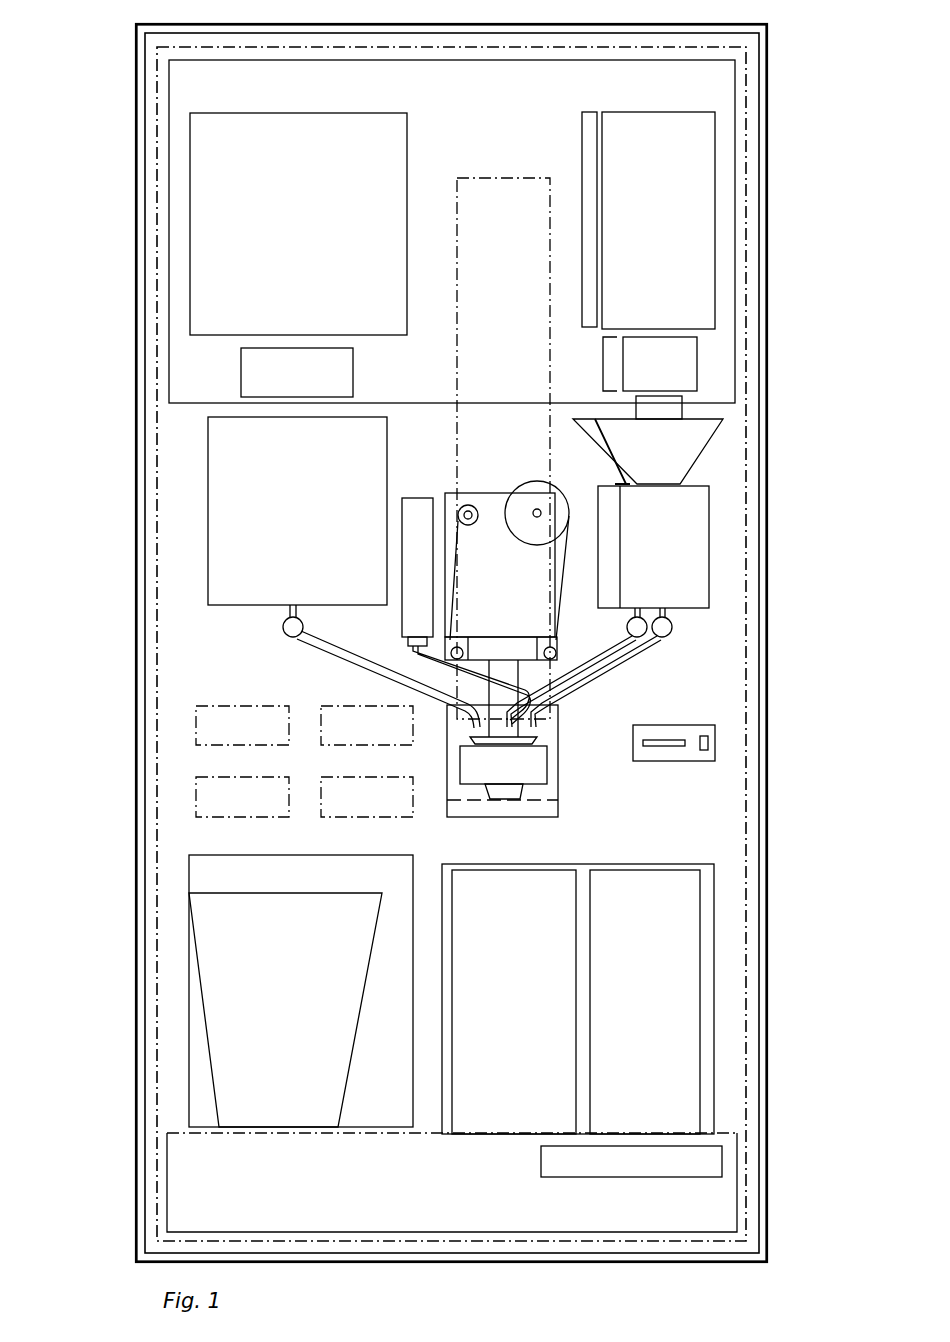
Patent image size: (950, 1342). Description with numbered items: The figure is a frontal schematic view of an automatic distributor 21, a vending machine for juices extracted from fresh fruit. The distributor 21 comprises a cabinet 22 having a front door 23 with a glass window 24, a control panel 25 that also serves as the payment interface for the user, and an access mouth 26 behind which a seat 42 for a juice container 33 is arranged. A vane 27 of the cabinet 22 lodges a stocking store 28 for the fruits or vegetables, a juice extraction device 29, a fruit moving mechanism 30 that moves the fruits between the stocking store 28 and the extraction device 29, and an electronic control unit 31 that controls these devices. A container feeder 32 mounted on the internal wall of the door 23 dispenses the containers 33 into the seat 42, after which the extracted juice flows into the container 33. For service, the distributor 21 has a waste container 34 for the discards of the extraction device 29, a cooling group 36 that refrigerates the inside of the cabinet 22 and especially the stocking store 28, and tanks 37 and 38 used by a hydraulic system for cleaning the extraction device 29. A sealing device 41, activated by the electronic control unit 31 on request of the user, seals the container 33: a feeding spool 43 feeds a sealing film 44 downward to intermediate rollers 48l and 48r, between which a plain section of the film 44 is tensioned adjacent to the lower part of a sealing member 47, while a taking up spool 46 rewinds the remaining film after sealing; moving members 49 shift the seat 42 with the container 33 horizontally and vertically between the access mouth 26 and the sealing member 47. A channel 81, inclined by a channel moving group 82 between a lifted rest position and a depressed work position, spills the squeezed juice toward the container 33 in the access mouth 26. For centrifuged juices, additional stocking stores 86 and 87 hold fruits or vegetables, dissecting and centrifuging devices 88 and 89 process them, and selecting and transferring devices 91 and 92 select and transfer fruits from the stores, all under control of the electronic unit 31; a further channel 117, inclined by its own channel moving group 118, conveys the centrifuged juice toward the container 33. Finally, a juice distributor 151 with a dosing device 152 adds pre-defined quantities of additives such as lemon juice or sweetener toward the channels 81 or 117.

The automatic distributor 21 is at (120, 76).
The cabinet 22 is at (772, 26).
The front door 23 is at (762, 214).
The glass window 24 is at (172, 302).
The control panel 25 is at (183, 683).
The access mouth 26 is at (547, 805).
The vane 27 is at (745, 668).
The stocking store 28 is at (310, 101).
The juice extraction device 29 is at (185, 482).
The fruit moving mechanism 30 is at (369, 384).
The electronic control unit 31 is at (553, 1178).
The container feeder 32 is at (482, 170).
The juice container 33 is at (516, 801).
The waste container 34 is at (362, 1007).
The cooling group 36 is at (714, 864).
The tank 37 is at (692, 967).
The tank 38 is at (460, 1116).
The sealing device 41 is at (478, 490).
The seat 42 is at (463, 776).
The feeding spool 43 is at (521, 490).
The sealing film 44 is at (563, 567).
The taking up spool 46 is at (478, 521).
The sealing member 47 is at (528, 657).
The intermediate roller 48l is at (449, 648).
The intermediate roller 48r is at (556, 654).
The moving members 49 is at (529, 729).
The channel 81 is at (316, 646).
The channel moving group 82 is at (282, 625).
The additional stocking store 86 is at (664, 97).
The additional stocking store 87 is at (574, 105).
The dissecting and centrifuging device 88 is at (723, 463).
The dissecting and centrifuging device 89 is at (574, 418).
The selecting and transferring device 91 is at (722, 353).
The selecting and transferring device 92 is at (581, 357).
The channel 117 is at (607, 666).
The channel moving group 118 is at (664, 648).
The juice distributor 151 is at (412, 572).
The dosing device 152 is at (410, 645).